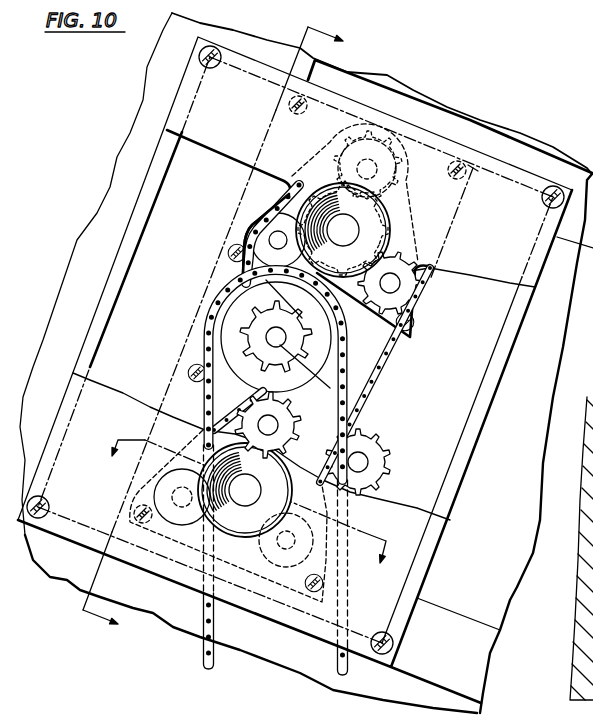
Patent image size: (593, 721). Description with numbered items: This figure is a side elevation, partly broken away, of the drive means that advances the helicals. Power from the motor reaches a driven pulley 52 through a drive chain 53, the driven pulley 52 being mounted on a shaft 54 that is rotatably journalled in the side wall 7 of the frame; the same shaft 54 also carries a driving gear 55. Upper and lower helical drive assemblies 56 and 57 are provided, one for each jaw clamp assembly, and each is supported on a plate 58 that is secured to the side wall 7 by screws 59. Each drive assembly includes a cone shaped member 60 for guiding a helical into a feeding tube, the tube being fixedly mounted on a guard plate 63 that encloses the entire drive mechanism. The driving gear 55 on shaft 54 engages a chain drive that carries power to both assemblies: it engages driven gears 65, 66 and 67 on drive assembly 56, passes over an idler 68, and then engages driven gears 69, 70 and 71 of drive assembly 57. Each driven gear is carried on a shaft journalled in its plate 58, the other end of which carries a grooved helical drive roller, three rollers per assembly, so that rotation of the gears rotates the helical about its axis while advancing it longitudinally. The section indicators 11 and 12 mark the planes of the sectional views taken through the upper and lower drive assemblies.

The housing 7 is at (504, 606).
The section line 11- 11 is at (146, 622).
The section line 12- 12 is at (245, 514).
The chain 52 is at (350, 357).
The sprocket 53 is at (253, 390).
The chain 54 is at (364, 393).
The sprocket 55 is at (222, 330).
The cover plate 56 is at (158, 433).
The cover plate outline 57 is at (449, 237).
The chain guide bracket 58 is at (257, 197).
The screw 59 is at (466, 180).
The spring drum 60 is at (342, 183).
The mounting plate 63 is at (432, 550).
The pivot screw 65 is at (178, 382).
The roller 66 is at (162, 498).
The roller 67 is at (281, 570).
The sprocket 68 is at (384, 464).
The sprocket 69 is at (408, 292).
The roller 70 is at (372, 167).
The roller 71 is at (250, 237).